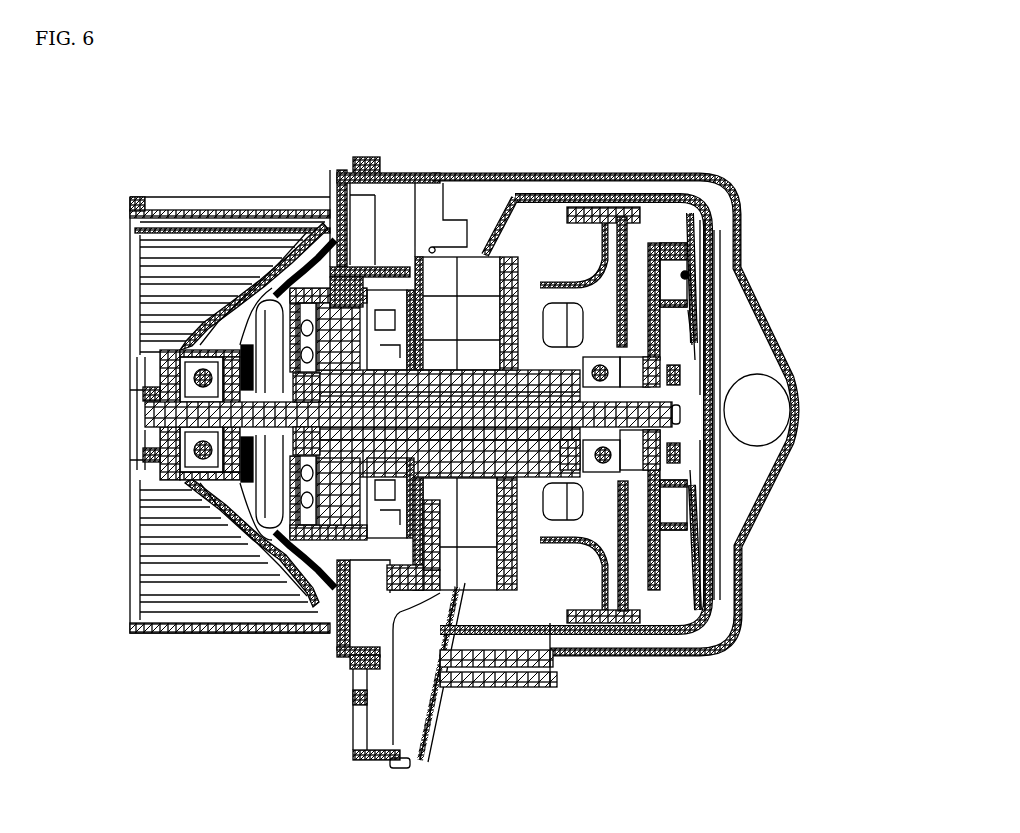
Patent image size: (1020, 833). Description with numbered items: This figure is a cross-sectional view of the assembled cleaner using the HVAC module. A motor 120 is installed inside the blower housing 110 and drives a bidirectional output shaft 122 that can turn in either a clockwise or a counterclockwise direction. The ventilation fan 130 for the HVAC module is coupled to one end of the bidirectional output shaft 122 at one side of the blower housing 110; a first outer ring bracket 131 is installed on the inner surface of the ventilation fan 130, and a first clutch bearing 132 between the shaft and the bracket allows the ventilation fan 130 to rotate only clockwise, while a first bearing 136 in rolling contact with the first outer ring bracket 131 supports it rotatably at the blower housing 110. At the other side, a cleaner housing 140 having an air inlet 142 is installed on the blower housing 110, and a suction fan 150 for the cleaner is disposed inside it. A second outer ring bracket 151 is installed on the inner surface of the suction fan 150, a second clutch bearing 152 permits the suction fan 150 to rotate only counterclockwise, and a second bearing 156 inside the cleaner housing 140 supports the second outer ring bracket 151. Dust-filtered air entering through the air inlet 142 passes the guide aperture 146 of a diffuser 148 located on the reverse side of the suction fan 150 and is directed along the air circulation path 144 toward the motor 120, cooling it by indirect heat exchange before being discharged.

The blower housing 110 is at (343, 170).
The motor 120 is at (345, 292).
The bidirectional output shaft 122 is at (317, 610).
The ventilation fan 130 is at (182, 198).
The first outer ring bracket 131 is at (160, 352).
The first clutch bearing 132 is at (147, 407).
The first bearing 136 is at (160, 470).
The cleaner housing 140 is at (668, 174).
The air inlet 142 is at (754, 410).
The air circulation path 144 is at (513, 188).
The guide aperture 146 is at (560, 283).
The diffuser 148 is at (600, 258).
The suction fan 150 is at (687, 600).
The second outer ring bracket 151 is at (718, 336).
The second clutch bearing 152 is at (694, 398).
The second bearing 156 is at (690, 460).